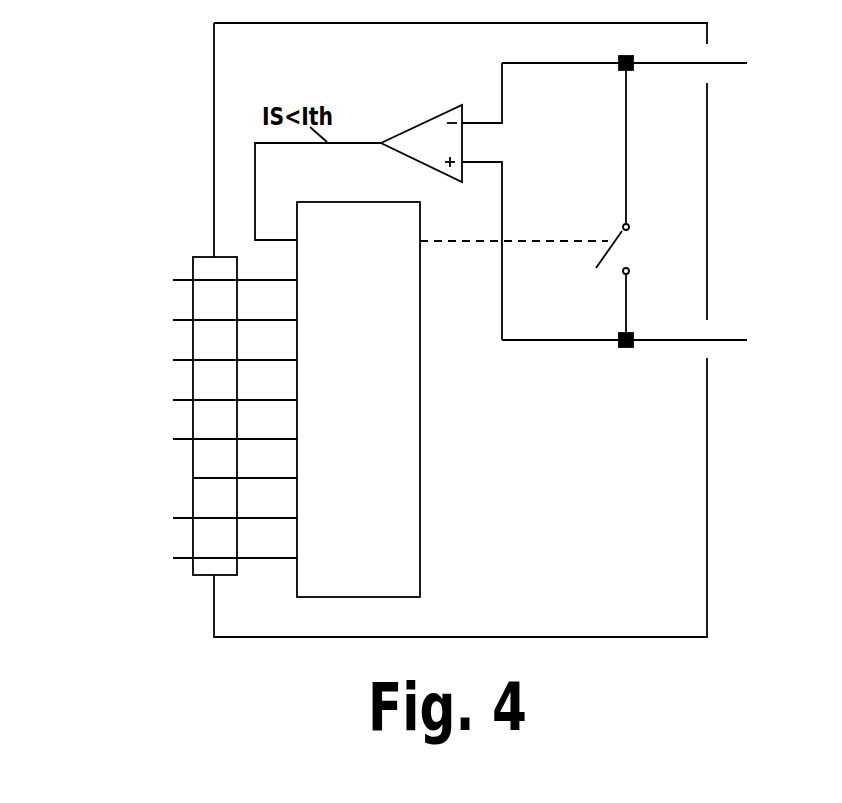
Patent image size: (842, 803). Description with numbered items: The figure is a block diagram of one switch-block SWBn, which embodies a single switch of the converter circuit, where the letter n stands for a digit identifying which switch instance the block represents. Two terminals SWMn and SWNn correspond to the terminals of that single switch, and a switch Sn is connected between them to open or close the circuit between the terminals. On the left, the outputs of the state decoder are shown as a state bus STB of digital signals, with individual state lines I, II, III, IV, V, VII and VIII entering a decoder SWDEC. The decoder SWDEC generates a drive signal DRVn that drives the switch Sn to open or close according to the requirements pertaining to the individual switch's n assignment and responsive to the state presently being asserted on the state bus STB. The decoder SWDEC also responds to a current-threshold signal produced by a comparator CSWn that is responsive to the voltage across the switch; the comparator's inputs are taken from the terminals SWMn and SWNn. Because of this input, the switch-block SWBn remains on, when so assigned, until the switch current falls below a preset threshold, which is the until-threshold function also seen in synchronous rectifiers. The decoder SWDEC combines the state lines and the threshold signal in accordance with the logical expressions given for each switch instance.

The switch-block SWBn is at (637, 590).
The switch decoder SWDEC is at (420, 512).
The state bus STB is at (200, 578).
The state bus signal I is at (225, 285).
The state bus signal II is at (222, 321).
The state bus signal III is at (219, 367).
The state bus signal IV is at (220, 402).
The state bus signal V is at (222, 440).
The state bus signal VII is at (213, 519).
The state bus signal VIII is at (208, 559).
The comparator CSWn is at (422, 123).
The switch terminal SWMn is at (743, 50).
The switch terminal SWNn is at (758, 328).
The switch Sn is at (613, 237).
The drive signal DRVn is at (587, 241).